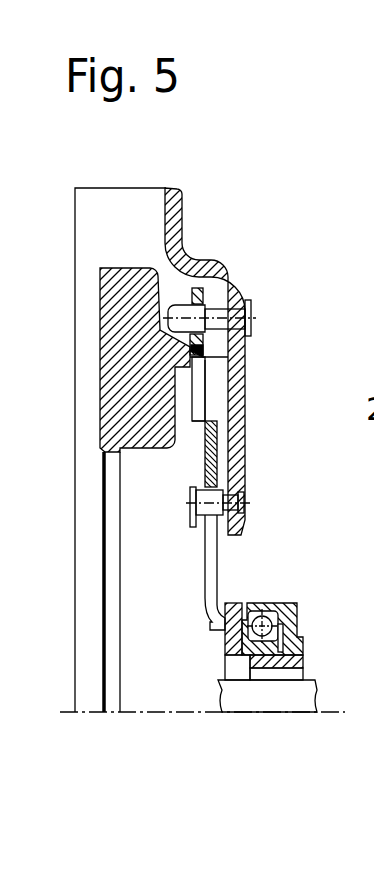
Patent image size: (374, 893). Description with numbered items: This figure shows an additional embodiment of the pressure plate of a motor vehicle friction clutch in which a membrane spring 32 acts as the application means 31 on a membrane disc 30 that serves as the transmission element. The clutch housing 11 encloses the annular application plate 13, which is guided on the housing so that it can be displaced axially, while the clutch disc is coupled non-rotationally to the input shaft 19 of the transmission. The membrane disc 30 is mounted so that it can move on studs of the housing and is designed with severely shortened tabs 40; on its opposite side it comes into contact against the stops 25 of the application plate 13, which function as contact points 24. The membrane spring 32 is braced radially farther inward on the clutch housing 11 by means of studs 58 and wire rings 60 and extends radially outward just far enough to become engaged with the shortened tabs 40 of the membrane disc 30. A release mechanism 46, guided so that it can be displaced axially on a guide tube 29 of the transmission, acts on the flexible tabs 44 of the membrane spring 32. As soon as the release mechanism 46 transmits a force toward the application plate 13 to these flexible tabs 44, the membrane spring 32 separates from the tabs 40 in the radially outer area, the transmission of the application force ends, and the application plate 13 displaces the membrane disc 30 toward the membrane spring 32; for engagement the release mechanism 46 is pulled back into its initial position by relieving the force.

The clutch housing 11 is at (183, 204).
The application plate 13 is at (109, 275).
The input shaft 19 is at (300, 697).
The contact points 24 is at (247, 334).
The stops 25 is at (192, 351).
The guide tube 29 is at (213, 401).
The membrane disc 30 is at (203, 352).
The application means 31 is at (218, 437).
The membrane spring 32 is at (217, 465).
The tabs 40 is at (197, 382).
The flexible tabs 44 is at (212, 569).
The release mechanism 46 is at (292, 612).
The studs 58 is at (245, 505).
The wire rings 60 is at (191, 490).